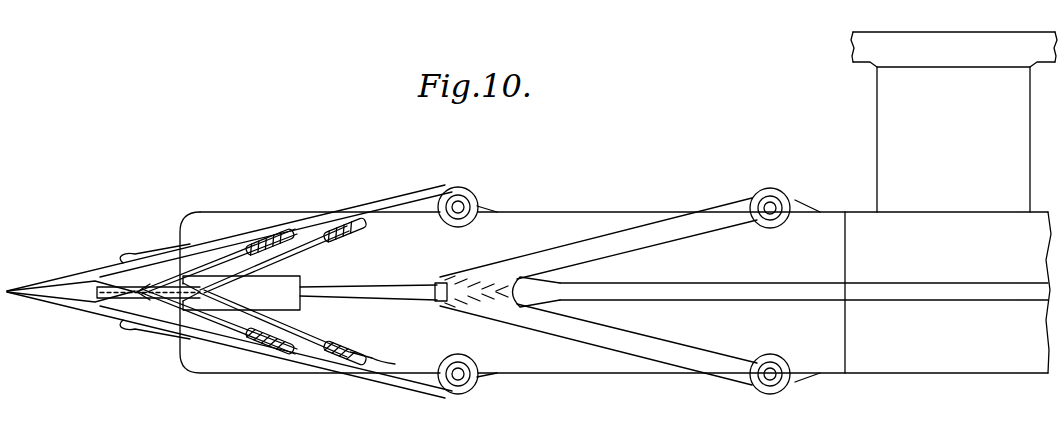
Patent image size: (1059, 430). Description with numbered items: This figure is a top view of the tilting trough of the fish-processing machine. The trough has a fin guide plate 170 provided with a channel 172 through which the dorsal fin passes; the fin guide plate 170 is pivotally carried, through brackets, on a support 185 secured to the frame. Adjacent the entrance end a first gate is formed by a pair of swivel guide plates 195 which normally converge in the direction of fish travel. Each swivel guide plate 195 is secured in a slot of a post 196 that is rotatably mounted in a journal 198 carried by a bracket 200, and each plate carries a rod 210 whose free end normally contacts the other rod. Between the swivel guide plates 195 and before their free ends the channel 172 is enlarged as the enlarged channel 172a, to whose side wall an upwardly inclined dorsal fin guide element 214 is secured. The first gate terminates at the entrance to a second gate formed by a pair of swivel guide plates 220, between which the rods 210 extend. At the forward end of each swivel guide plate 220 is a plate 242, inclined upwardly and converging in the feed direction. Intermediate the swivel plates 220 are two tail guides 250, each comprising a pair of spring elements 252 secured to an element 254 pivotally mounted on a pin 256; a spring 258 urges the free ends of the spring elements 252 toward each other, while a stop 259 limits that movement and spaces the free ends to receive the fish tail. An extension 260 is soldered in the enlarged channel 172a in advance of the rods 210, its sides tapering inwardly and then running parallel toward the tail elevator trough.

The fin guide plate 170 is at (556, 221).
The channel 172 is at (707, 293).
The enlarged channel 172a is at (337, 280).
The support 185 is at (883, 132).
The swivel guide plates 195 is at (630, 226).
The post 196 is at (772, 212).
The journal 198 is at (765, 191).
The bracket 200 is at (795, 200).
The rod 210 is at (385, 298).
The dorsal fin guide element 214 is at (425, 295).
The swivel guide plates 220 is at (293, 232).
The plate 242 is at (76, 270).
The tail guide 250 is at (159, 313).
The spring element 252 is at (313, 343).
The element 254 is at (345, 347).
The pin 256 is at (348, 228).
The spring 258 is at (352, 352).
The stop 259 is at (373, 358).
The extension 260 is at (74, 311).